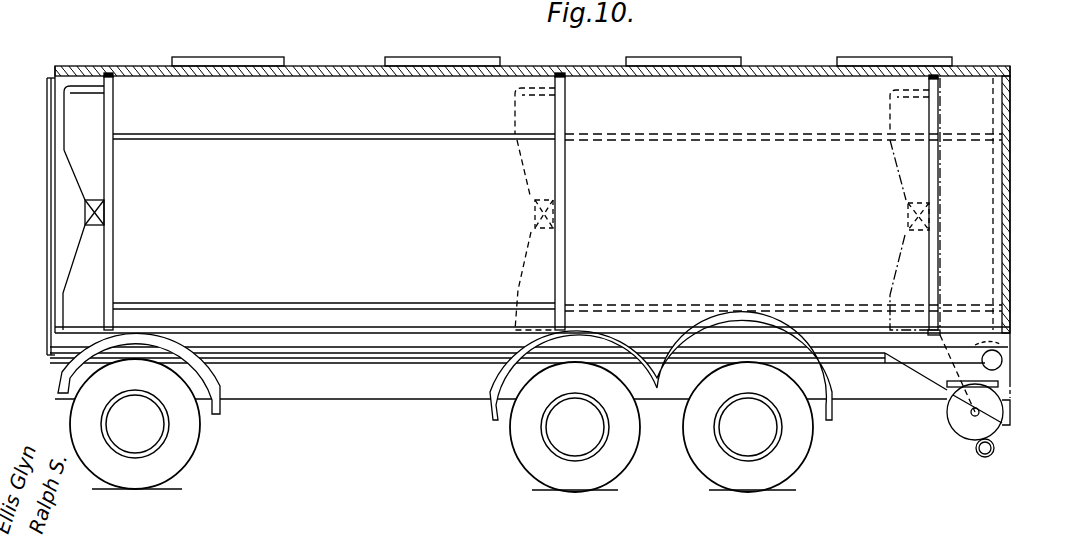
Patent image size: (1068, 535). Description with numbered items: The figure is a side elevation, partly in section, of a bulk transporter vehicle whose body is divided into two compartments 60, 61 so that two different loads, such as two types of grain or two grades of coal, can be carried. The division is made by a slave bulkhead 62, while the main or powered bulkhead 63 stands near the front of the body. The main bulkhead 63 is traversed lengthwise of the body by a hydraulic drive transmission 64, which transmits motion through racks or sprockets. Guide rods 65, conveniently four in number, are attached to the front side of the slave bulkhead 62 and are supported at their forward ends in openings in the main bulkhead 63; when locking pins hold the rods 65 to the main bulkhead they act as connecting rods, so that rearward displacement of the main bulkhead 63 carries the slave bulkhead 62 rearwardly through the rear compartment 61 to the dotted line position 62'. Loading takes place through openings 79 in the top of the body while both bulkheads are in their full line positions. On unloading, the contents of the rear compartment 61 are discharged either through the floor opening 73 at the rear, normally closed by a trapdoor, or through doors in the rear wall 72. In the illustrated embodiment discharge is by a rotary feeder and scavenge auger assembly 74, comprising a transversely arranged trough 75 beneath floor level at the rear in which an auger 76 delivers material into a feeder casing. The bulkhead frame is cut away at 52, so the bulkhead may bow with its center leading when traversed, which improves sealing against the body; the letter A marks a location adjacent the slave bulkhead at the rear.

The cut-away portion of bulkhead frame 52 is at (85, 222).
The front compartment 60 is at (360, 218).
The rear compartment 61 is at (765, 220).
The slave bulkhead 62 is at (579, 201).
The dotted line position of slave bulkhead 62' is at (987, 202).
The main bulkhead 63 is at (113, 200).
The hydraulic drive transmission 64 is at (95, 200).
The guide rods 65 is at (376, 134).
The rear wall 72 is at (1008, 215).
The discharge opening 73 is at (975, 333).
The rotary feeder and scavenge auger assembly 74 is at (1003, 408).
The trough 75 is at (1005, 345).
The auger 76 is at (1005, 378).
The loading openings 79 is at (383, 59).
The position A is at (935, 237).